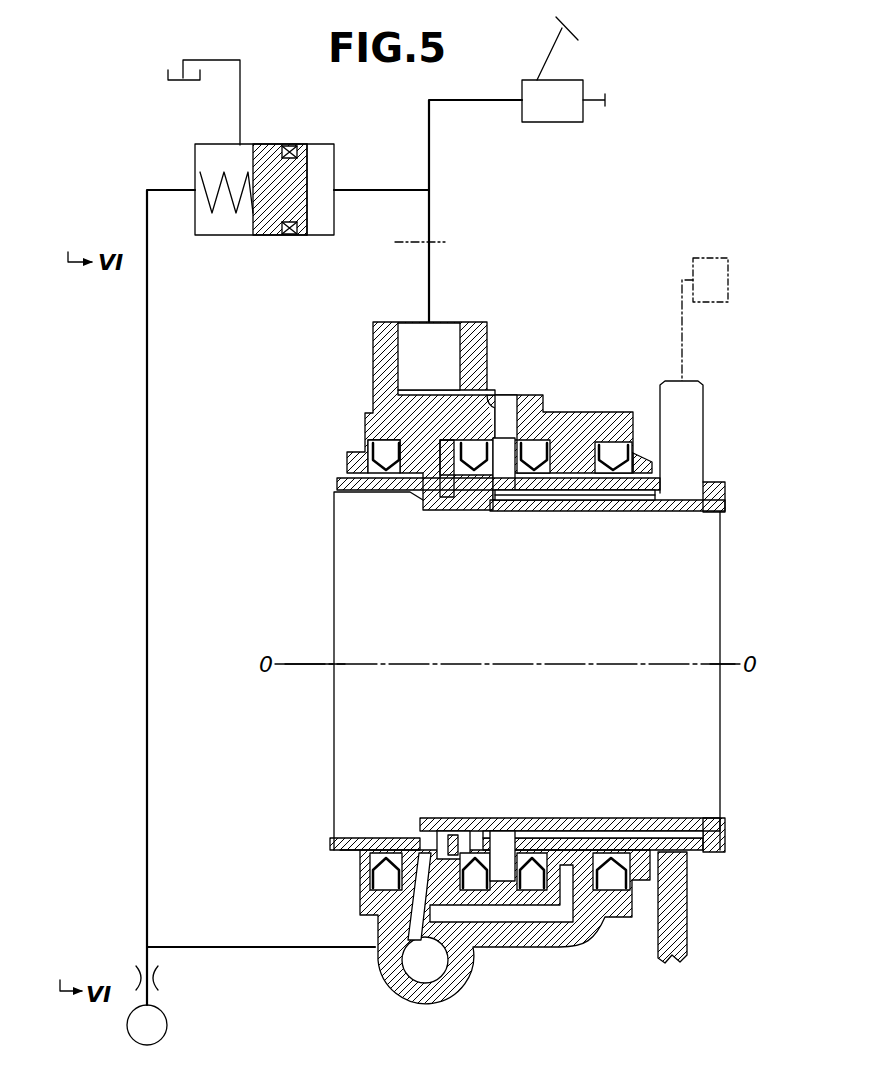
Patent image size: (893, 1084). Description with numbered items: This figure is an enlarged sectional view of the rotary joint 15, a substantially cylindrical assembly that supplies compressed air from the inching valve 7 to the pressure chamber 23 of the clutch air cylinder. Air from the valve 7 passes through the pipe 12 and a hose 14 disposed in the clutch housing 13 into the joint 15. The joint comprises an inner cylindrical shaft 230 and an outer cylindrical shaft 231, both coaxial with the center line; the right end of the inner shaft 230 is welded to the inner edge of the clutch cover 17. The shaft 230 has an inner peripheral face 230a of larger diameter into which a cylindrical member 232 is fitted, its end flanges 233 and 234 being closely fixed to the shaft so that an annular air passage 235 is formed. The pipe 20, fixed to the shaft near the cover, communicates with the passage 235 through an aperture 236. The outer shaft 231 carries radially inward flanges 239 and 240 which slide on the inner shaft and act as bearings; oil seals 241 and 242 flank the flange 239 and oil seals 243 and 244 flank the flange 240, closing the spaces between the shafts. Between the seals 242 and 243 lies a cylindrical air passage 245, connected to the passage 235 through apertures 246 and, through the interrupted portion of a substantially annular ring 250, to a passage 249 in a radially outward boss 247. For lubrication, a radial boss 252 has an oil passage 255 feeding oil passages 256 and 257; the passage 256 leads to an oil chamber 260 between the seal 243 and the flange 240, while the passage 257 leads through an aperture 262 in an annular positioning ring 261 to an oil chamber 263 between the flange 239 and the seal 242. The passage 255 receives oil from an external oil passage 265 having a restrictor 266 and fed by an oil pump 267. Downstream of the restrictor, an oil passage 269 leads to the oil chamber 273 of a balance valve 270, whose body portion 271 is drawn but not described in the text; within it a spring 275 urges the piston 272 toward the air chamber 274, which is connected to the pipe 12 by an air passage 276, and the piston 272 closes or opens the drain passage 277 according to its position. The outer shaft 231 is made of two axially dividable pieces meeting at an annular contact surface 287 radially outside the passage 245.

The inching valve 7 is at (550, 115).
The pipe 12 is at (430, 205).
The clutch housing 13 is at (438, 243).
The hose 14 is at (432, 285).
The rotary joint 15 is at (310, 423).
The clutch cover 17 is at (685, 905).
The pipe 20 is at (705, 410).
The pressure chamber 23 is at (708, 262).
The inner cylindrical shaft 230 is at (555, 512).
The inner peripheral face 230a is at (610, 515).
The outer cylindrical shaft 231 is at (577, 465).
The cylindrical member 232 is at (575, 497).
The radially outward flange 233 is at (478, 506).
The radially outward flange 234 is at (725, 492).
The air passage 235 is at (545, 500).
The aperture 236 is at (690, 488).
The radially inward flange 239 is at (405, 496).
The radially inward flange 240 is at (598, 455).
The annular oil seal 241 is at (370, 496).
The annular oil seal 242 is at (450, 503).
The annular oil seal 243 is at (510, 496).
The annular oil seal 244 is at (640, 500).
The cylindrical air passage 245 is at (543, 470).
The apertures 246 is at (505, 500).
The radially outward boss 247 is at (372, 362).
The passage 249 is at (412, 335).
The substantially annular ring 250 is at (513, 458).
The radial boss 252 is at (385, 995).
The oil passage 255 is at (395, 968).
The oil passage 256 is at (535, 930).
The oil passage 257 is at (365, 905).
The oil chamber 260 is at (545, 835).
The annular positioning ring 261 is at (445, 858).
The aperture 262 is at (430, 830).
The oil chamber 263 is at (456, 835).
The external oil passage 265 is at (240, 947).
The restrictor 266 is at (152, 978).
The oil pump 267 is at (165, 1035).
The oil passage 269 is at (148, 690).
The balance valve 270 is at (190, 157).
The valve body 271 is at (217, 236).
The piston 272 is at (275, 236).
The oil chamber 273 is at (200, 236).
The air chamber 274 is at (330, 208).
The spring 275 is at (233, 236).
The air passage 276 is at (383, 190).
The drain passage 277 is at (240, 100).
The annular contact surface 287 is at (508, 440).